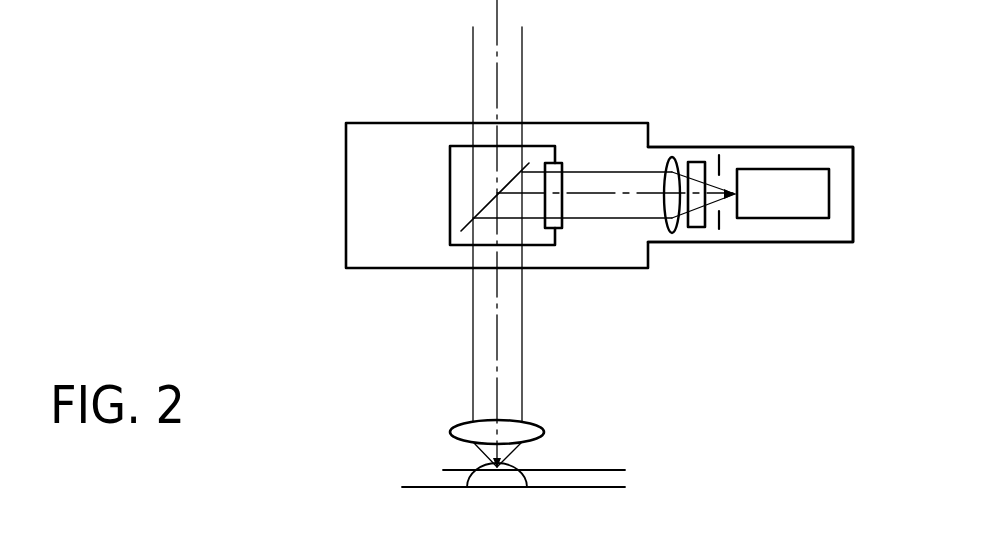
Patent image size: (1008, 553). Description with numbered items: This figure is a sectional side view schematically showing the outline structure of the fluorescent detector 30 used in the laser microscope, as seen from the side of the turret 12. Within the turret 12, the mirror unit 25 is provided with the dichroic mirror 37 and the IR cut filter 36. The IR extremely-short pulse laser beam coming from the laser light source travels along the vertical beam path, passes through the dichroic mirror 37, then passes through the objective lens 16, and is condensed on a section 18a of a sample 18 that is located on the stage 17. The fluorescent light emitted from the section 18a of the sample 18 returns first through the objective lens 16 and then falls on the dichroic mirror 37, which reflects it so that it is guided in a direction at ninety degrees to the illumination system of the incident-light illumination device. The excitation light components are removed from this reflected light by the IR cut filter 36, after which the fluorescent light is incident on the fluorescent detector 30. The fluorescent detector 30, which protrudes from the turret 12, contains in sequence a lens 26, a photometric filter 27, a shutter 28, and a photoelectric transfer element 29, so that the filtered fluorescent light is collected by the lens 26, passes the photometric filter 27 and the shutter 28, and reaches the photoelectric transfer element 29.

The turret 12 is at (366, 117).
The objective lens 16 is at (463, 425).
The stage 17 is at (413, 485).
The sample 18 is at (513, 478).
The section of sample 18a is at (610, 468).
The mirror unit 25 is at (538, 141).
The lens 26 is at (672, 157).
The photometric filter 27 is at (695, 228).
The shutter 28 is at (723, 160).
The photoelectric transfer element 29 is at (829, 193).
The fluorescent detector 30 is at (771, 248).
The IR cut filter 36 is at (558, 162).
The dichroic mirror 37 is at (465, 223).